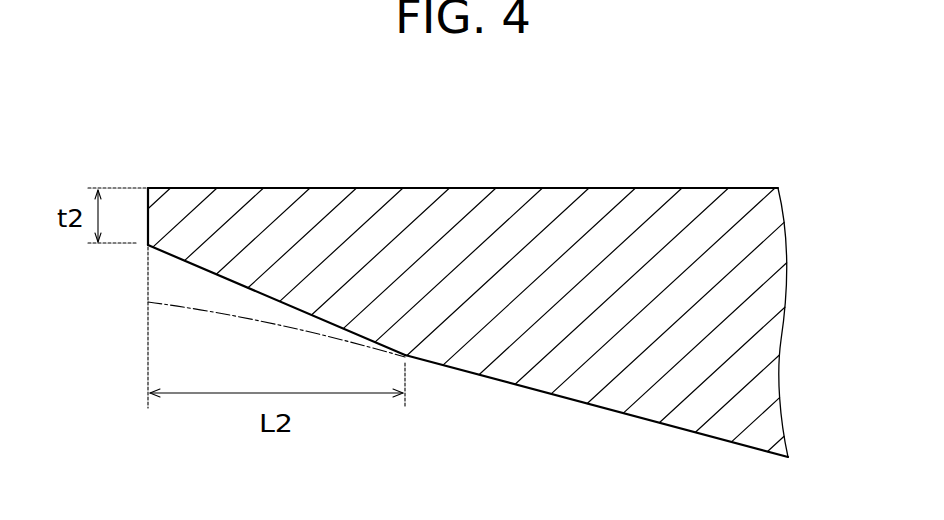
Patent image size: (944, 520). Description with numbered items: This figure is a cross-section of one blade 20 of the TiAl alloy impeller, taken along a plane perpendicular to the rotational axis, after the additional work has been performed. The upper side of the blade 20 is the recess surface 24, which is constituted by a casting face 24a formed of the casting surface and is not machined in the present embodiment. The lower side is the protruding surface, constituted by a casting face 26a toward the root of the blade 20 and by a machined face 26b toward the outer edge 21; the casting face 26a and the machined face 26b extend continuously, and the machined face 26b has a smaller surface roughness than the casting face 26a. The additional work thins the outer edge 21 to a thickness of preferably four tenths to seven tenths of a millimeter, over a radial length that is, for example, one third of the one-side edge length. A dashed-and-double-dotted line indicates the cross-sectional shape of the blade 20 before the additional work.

The blade 20 is at (617, 187).
The outer edge 21 is at (147, 210).
The recess surface 24 is at (336, 187).
The casting face 24a is at (478, 187).
The casting face 26a is at (578, 404).
The machined face 26b is at (182, 260).